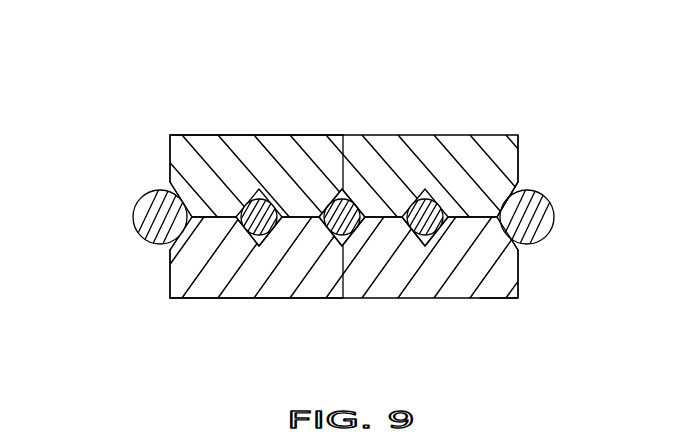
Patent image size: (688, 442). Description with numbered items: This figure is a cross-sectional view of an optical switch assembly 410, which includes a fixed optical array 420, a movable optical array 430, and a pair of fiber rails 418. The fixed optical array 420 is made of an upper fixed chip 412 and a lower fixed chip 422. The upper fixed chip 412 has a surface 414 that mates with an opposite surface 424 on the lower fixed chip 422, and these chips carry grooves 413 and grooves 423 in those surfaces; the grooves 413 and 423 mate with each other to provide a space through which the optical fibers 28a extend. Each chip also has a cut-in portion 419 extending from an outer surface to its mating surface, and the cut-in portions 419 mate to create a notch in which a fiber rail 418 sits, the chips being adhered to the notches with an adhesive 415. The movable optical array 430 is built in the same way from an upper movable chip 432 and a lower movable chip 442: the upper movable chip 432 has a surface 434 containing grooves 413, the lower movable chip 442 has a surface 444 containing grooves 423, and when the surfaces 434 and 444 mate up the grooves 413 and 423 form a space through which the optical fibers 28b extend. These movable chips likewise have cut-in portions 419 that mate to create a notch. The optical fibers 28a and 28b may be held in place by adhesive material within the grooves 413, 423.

The optical switch assembly 410 is at (370, 208).
The upper fixed chip 412 is at (450, 158).
The grooves 413 is at (256, 186).
The surface 414 is at (510, 255).
The adhesive 415 is at (513, 190).
The fiber rails 418 is at (143, 197).
The cut-in portion 419 is at (171, 186).
The fixed optical array 420 is at (518, 135).
The lower fixed chip 422 is at (520, 298).
The grooves 423 is at (256, 250).
The surface 424 is at (362, 247).
The movable optical array 430 is at (186, 160).
The upper movable chip 432 is at (223, 150).
The surface 434 is at (345, 186).
The lower movable chip 442 is at (178, 260).
The surface 444 is at (187, 285).
The optical fibers 28a is at (345, 240).
The optical fibers 28b is at (288, 262).